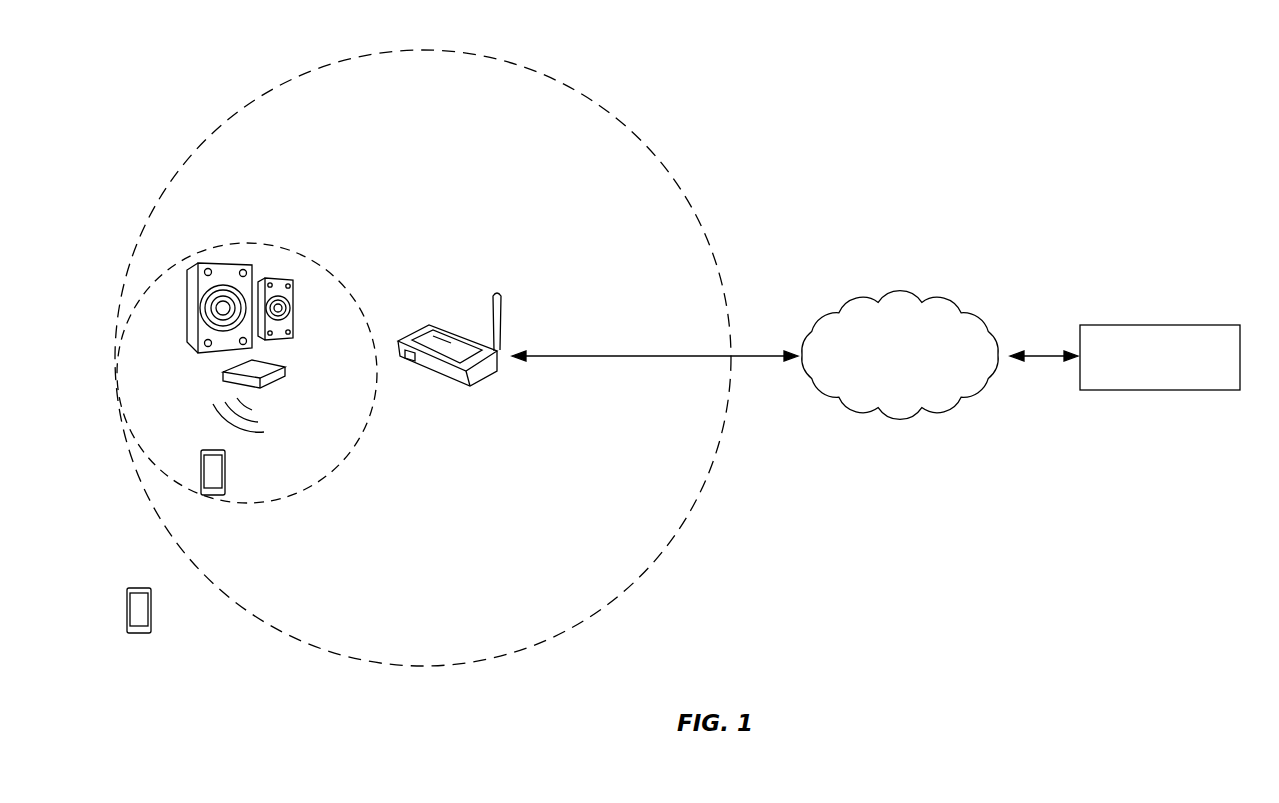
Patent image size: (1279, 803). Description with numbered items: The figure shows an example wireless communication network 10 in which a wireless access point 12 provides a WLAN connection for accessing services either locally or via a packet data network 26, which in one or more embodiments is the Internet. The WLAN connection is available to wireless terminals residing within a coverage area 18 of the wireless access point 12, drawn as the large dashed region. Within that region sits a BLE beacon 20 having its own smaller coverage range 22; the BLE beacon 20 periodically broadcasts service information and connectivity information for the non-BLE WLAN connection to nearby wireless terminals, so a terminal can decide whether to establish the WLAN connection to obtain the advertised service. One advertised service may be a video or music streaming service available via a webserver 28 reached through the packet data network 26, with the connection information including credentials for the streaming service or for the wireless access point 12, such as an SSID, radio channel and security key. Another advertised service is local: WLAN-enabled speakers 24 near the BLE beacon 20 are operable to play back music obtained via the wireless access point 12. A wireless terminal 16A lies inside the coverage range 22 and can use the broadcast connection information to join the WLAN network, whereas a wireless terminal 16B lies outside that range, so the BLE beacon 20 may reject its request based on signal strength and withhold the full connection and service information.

The wireless communication network 10 is at (948, 97).
The wireless access point 12 is at (441, 378).
The wireless terminal 16A is at (218, 495).
The wireless terminal 16B is at (140, 633).
The coverage area 18 is at (548, 72).
The BLE beacon 20 is at (285, 370).
The coverage range 22 is at (340, 276).
The WLAN-enabled speakers 24 is at (276, 278).
The packet data network 26 is at (900, 355).
The webserver 28 is at (1160, 357).